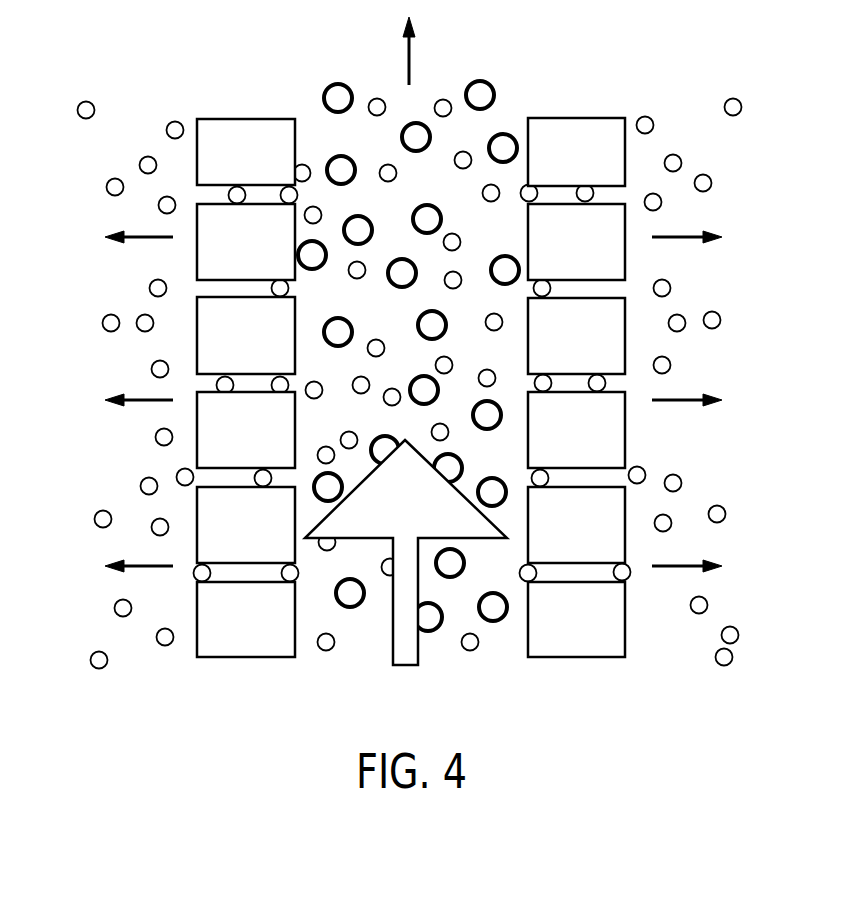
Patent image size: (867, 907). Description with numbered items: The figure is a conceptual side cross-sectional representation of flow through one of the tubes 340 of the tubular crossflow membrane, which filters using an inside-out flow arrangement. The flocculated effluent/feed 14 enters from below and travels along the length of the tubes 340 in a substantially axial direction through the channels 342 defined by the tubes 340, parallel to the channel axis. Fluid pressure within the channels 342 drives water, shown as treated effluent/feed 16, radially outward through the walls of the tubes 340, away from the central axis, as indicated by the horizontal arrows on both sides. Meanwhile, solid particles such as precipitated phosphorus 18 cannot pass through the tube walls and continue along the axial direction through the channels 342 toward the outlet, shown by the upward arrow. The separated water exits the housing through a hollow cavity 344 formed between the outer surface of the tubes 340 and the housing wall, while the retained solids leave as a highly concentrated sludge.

The flocculated effluent/feed 14 is at (405, 666).
The treated effluent/feed 16 is at (144, 238).
The precipitated phosphorus 18 is at (409, 60).
The tube 340 is at (597, 112).
The channel 342 is at (505, 127).
The hollow cavity 344 is at (131, 116).